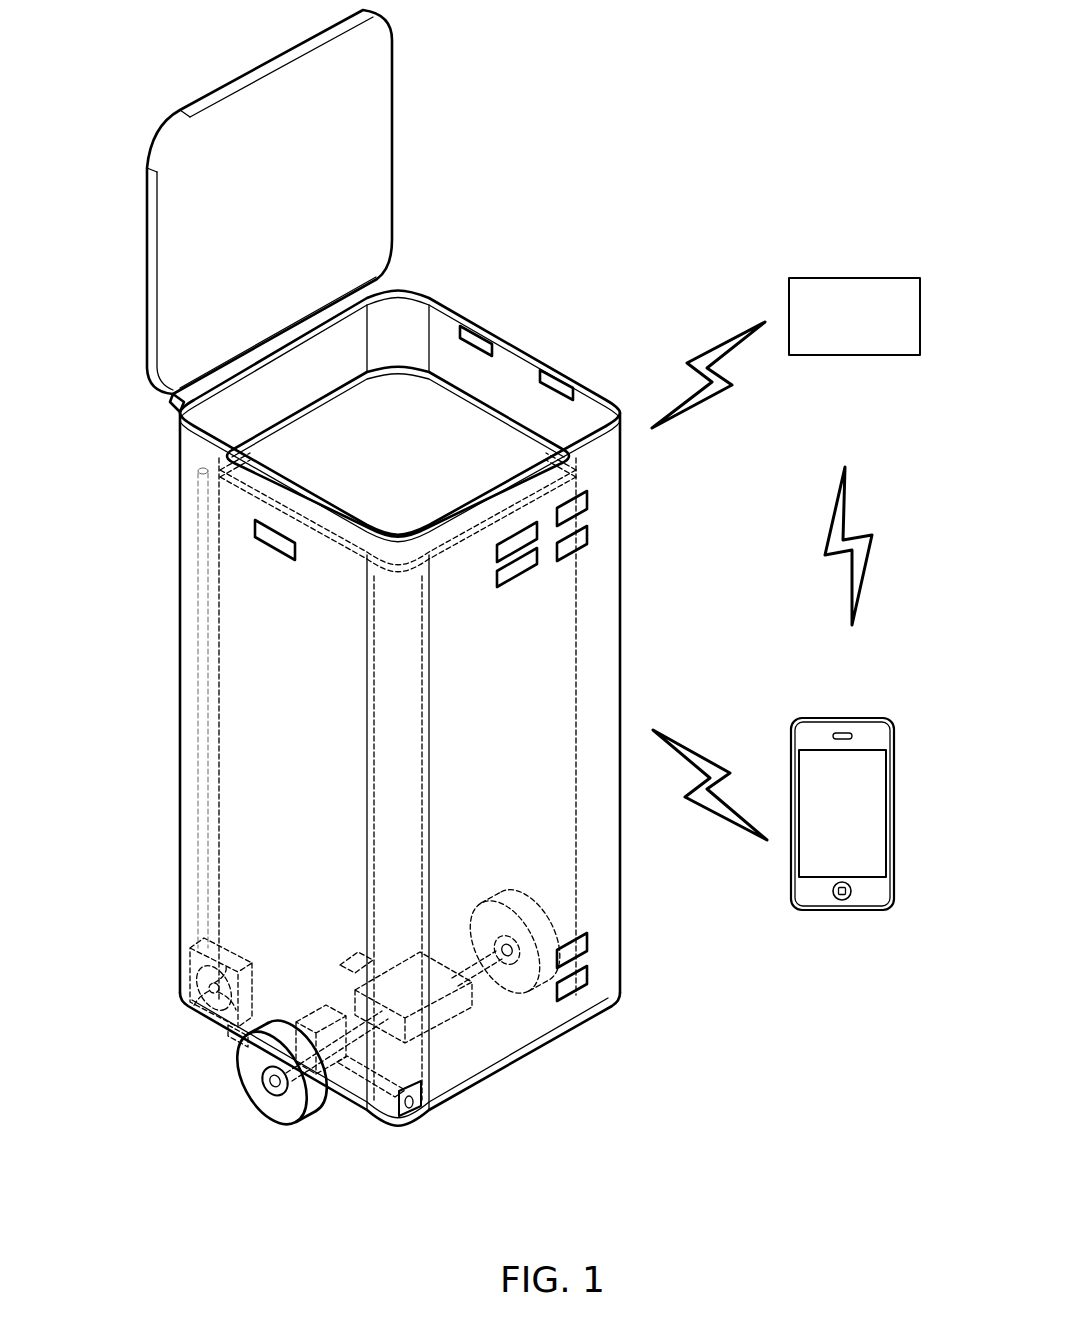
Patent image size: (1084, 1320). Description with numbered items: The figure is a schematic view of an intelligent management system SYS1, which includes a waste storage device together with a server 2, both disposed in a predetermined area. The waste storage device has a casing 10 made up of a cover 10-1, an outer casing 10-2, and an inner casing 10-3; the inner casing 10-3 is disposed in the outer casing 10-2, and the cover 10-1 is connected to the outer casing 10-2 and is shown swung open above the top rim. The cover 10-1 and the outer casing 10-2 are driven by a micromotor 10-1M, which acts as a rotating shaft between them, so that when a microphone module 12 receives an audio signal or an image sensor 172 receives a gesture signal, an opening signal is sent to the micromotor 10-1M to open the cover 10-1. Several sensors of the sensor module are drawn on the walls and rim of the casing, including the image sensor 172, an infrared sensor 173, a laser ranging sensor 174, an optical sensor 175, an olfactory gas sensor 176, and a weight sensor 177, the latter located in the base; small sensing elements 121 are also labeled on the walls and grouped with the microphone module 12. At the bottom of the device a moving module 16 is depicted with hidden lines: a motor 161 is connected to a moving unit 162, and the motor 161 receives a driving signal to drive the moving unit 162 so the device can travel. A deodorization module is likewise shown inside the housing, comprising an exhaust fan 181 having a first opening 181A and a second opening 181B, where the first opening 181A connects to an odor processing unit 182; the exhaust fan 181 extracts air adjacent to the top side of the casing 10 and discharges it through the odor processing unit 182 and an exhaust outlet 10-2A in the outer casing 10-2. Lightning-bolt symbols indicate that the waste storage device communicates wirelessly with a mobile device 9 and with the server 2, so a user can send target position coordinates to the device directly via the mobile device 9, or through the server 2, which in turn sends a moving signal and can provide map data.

The cover 10-1 is at (385, 141).
The micromotor 10-1M is at (172, 405).
The outer casing 10-2 is at (603, 578).
The exhaust outlet 10-2A is at (409, 1108).
The inner casing 10-3 is at (483, 425).
The casing 10 is at (759, 1028).
The microphone module 12 is at (759, 670).
The sensors 121 is at (272, 542).
The moving module 16 is at (759, 1124).
The motor 161 is at (455, 1006).
The moving unit 162 is at (270, 1103).
The image sensor 172 is at (502, 586).
The infrared sensor 173 is at (582, 503).
The laser ranging sensor 174 is at (582, 546).
The optical sensor 175 is at (558, 380).
The olfactory gas sensor 176 is at (480, 333).
The weight sensor 177 is at (345, 955).
The exhaust fan 181 is at (183, 1010).
The first opening 181A is at (207, 527).
The second opening 181B is at (250, 1037).
The odor processing unit 182 is at (312, 1022).
The server 2 is at (870, 278).
The mobile device 9 is at (855, 718).
The intelligent management system SYS1 is at (833, 140).